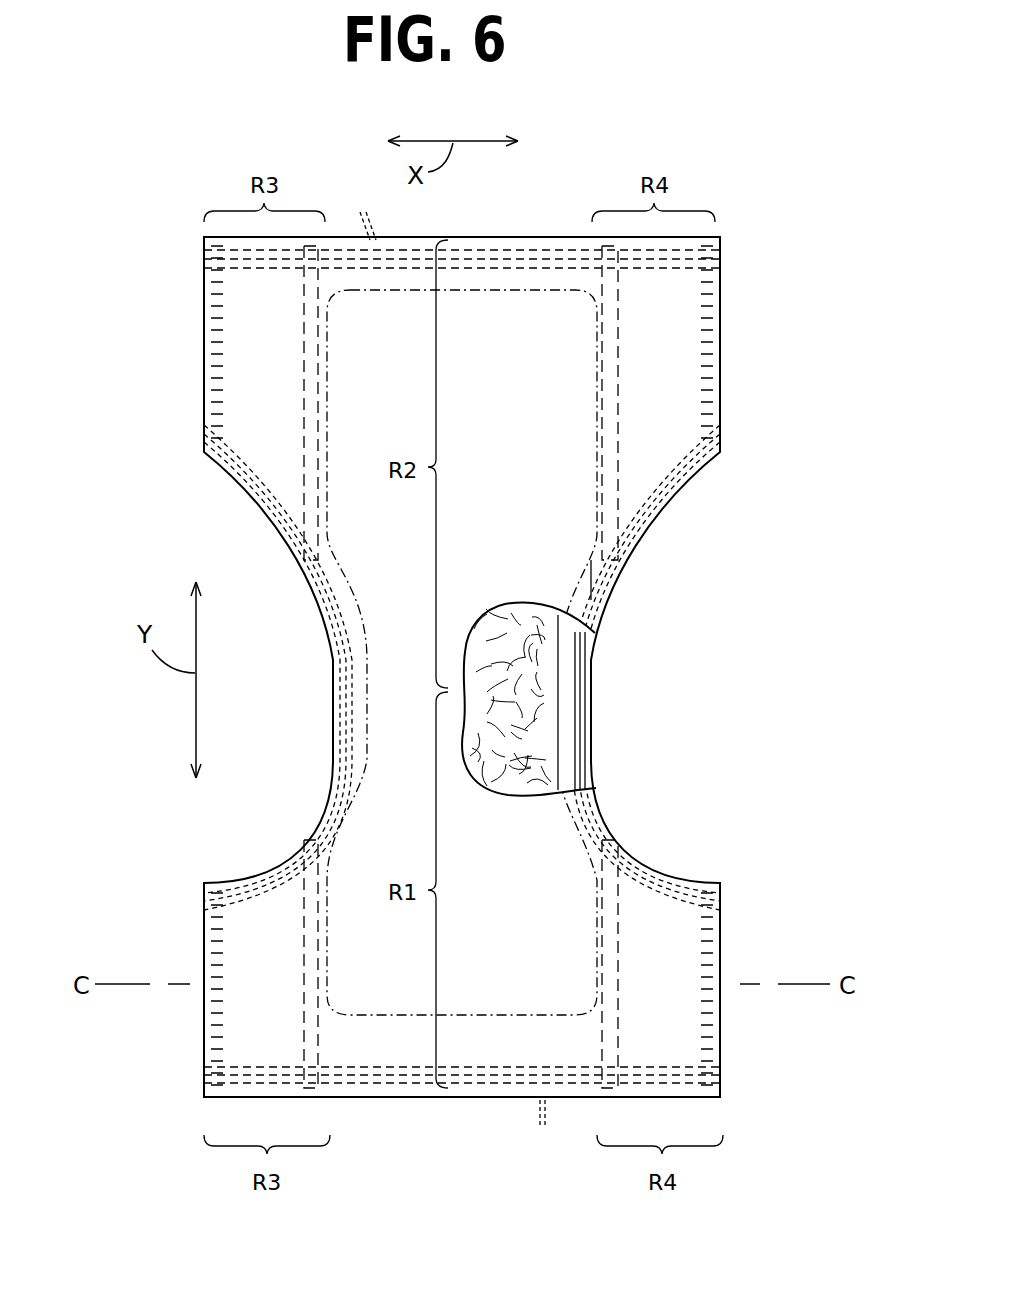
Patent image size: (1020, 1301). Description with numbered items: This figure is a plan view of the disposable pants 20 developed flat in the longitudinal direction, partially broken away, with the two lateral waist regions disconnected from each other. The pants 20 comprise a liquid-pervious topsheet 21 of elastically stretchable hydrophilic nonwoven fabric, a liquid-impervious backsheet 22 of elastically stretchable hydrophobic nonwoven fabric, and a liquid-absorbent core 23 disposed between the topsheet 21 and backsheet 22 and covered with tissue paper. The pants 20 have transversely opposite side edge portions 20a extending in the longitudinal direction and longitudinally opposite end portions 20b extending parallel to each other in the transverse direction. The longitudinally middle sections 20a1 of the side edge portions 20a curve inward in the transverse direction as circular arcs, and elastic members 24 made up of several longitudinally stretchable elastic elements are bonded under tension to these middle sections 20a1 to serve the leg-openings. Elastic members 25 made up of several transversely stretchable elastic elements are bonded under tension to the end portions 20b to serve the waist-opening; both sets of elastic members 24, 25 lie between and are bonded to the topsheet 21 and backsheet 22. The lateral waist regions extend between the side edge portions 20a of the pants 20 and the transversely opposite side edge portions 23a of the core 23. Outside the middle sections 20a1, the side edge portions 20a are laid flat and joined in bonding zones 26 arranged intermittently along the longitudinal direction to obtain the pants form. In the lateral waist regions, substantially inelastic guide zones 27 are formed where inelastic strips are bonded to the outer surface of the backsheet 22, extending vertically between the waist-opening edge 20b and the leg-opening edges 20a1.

The disposable pants 20 is at (733, 128).
The side edge portions 20a is at (683, 415).
The longitudinally middle sections 20a1 is at (607, 583).
The end portions 20b is at (540, 238).
The topsheet 21 is at (687, 1045).
The backsheet 22 is at (567, 654).
The liquid-absorbent core 23 is at (520, 800).
The side edge portions of the core 23a is at (574, 394).
The elastic members 24 is at (312, 620).
The elastic members 25 is at (453, 668).
The bonding zones 26 is at (222, 326).
The inelastic guide zones 27 is at (306, 331).